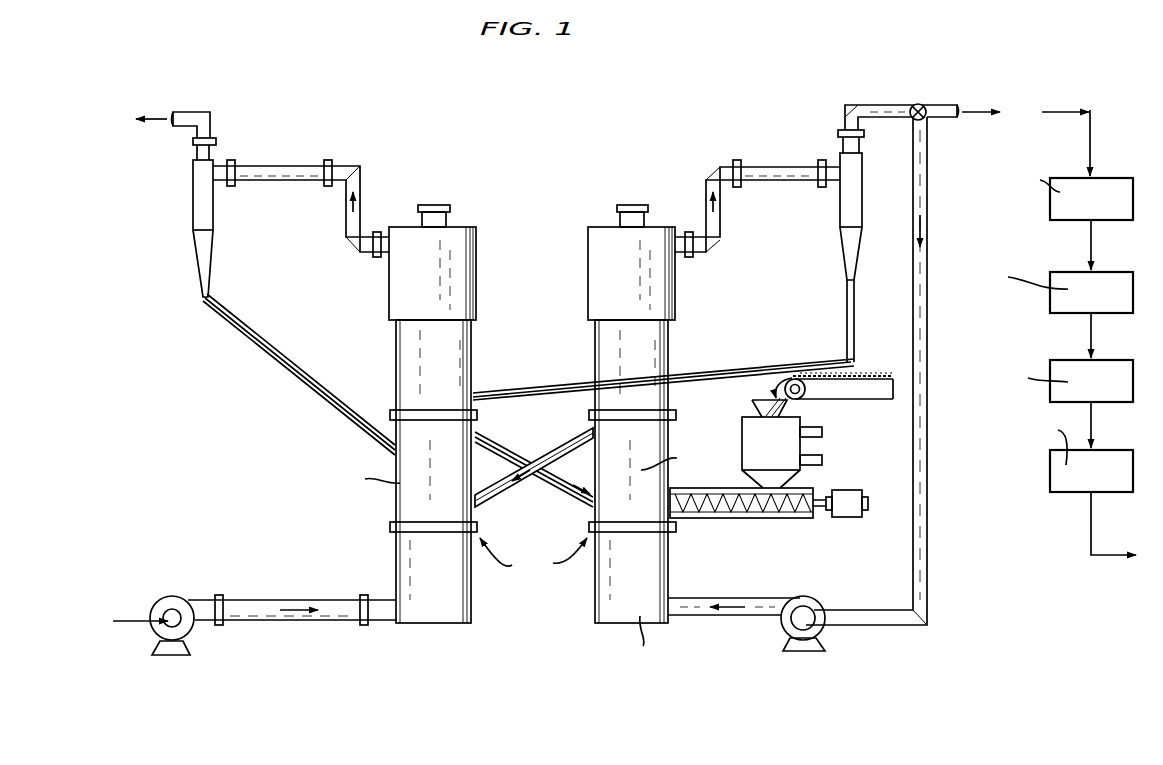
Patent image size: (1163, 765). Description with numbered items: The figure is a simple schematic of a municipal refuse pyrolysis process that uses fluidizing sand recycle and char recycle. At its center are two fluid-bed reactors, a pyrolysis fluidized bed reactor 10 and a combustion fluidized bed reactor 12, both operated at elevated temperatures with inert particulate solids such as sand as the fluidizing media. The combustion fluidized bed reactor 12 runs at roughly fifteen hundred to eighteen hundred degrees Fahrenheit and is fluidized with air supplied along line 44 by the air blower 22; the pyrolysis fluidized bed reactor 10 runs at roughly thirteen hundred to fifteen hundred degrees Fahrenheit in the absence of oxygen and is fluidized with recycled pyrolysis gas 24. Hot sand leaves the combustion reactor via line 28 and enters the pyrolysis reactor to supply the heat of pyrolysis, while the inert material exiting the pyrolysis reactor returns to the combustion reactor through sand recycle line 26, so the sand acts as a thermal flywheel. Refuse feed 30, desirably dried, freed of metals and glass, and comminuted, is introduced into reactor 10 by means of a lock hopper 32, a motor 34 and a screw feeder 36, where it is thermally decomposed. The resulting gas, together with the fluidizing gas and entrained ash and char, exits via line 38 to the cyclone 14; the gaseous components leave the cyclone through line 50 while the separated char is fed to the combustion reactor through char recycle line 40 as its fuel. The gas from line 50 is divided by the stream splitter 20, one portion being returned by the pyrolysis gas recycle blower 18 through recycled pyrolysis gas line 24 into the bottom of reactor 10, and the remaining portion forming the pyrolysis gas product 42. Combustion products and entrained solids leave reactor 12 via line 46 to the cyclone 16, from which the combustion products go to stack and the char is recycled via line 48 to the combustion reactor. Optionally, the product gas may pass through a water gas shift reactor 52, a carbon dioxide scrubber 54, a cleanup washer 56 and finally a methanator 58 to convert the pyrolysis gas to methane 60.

The pyrolysis fluidized bed reactor 10 is at (657, 234).
The combustion fluidized bed reactor 12 is at (406, 234).
The cyclone 14 is at (840, 216).
The cyclone 16 is at (198, 198).
The pyrolysis gas recycle blower 18 is at (808, 645).
The stream splitter 20 is at (917, 105).
The air blower 22 is at (176, 636).
The recycled pyrolysis gas line 24 is at (921, 558).
The sand recycle line 26 is at (578, 438).
The sand recycle line 28 is at (504, 434).
The refuse feed 30 is at (867, 388).
The lock hopper 32 is at (788, 443).
The motor 34 is at (848, 515).
The screw feeder 36 is at (765, 521).
The line 38 is at (719, 168).
The char recycle line 40 is at (717, 371).
The pyrolysis gas product 42 is at (1026, 127).
The line 44 is at (289, 600).
The line 46 is at (286, 170).
The line 48 is at (298, 356).
The line 50 is at (883, 118).
The water gas shift reactor 52 is at (1105, 178).
The carbon dioxide scrubber 54 is at (1104, 272).
The cleanup washer 56 is at (1104, 360).
The methanator 58 is at (1108, 450).
The methane 60 is at (1108, 553).